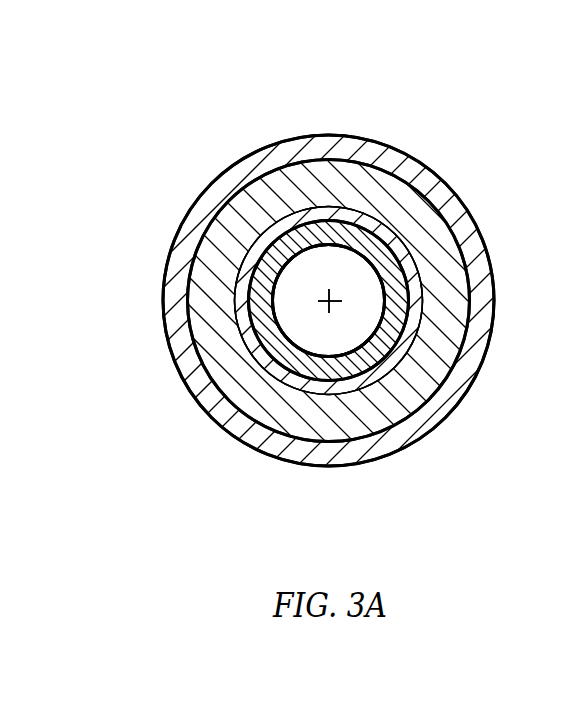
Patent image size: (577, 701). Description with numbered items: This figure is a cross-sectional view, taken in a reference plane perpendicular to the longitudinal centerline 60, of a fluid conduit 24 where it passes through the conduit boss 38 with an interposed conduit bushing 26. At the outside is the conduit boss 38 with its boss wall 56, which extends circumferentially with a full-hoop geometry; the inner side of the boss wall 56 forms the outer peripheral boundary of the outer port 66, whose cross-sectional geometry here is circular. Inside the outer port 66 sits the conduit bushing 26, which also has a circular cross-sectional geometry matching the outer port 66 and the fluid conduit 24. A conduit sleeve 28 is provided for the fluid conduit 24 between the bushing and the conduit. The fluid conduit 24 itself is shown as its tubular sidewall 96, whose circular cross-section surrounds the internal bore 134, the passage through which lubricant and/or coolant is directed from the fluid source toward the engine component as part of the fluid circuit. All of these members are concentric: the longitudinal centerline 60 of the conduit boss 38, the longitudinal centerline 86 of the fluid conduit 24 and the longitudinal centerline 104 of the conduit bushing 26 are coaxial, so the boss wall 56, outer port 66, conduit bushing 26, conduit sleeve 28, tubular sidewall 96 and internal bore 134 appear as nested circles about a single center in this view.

The conduit boss 38 is at (317, 271).
The boss wall 56 is at (235, 167).
The conduit bushing 26 is at (455, 230).
The conduit sleeve 28 is at (430, 283).
The fluid conduit 24 is at (413, 321).
The outer port 66 is at (452, 378).
The tubular sidewall 96 is at (258, 315).
The internal bore 134 is at (355, 282).
The longitudinal centerline 60 is at (312, 383).
The longitudinal centerline 86 is at (312, 383).
The longitudinal centerline 104 is at (324, 306).